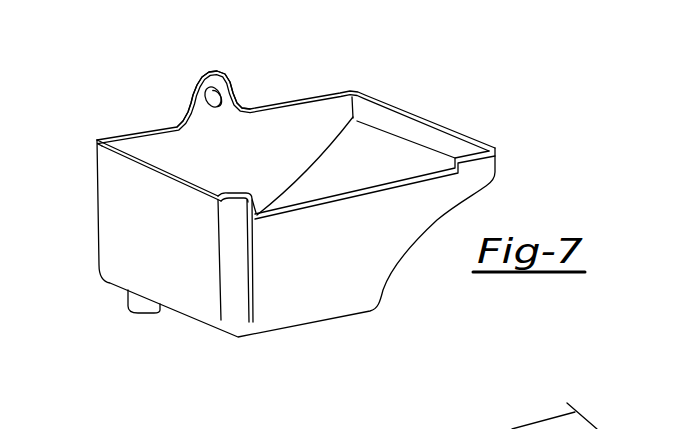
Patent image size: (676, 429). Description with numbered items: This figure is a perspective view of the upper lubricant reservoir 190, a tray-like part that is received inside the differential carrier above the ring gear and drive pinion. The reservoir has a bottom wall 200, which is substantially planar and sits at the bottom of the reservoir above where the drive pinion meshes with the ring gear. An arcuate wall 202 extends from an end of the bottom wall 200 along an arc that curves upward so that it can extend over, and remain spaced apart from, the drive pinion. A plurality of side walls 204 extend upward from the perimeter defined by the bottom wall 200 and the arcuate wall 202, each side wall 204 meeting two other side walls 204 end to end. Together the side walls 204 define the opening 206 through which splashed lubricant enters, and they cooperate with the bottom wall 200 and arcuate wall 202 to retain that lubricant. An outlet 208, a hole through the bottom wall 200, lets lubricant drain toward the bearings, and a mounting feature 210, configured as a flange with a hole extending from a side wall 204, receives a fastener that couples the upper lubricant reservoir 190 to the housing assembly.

The upper lubricant reservoir 190 is at (410, 58).
The bottom wall 200 is at (300, 326).
The arcuate wall 202 is at (417, 160).
The side walls 204 is at (388, 93).
The opening 206 is at (395, 144).
The outlet 208 is at (143, 305).
The mounting feature 210 is at (200, 74).